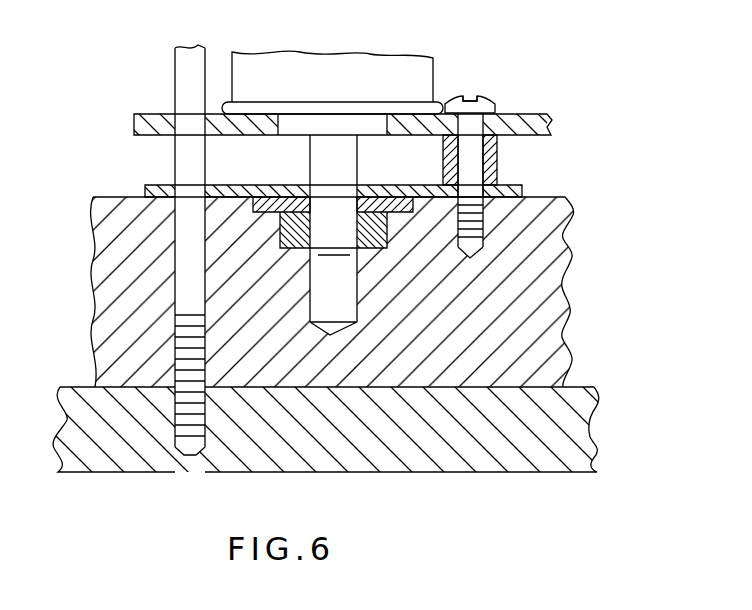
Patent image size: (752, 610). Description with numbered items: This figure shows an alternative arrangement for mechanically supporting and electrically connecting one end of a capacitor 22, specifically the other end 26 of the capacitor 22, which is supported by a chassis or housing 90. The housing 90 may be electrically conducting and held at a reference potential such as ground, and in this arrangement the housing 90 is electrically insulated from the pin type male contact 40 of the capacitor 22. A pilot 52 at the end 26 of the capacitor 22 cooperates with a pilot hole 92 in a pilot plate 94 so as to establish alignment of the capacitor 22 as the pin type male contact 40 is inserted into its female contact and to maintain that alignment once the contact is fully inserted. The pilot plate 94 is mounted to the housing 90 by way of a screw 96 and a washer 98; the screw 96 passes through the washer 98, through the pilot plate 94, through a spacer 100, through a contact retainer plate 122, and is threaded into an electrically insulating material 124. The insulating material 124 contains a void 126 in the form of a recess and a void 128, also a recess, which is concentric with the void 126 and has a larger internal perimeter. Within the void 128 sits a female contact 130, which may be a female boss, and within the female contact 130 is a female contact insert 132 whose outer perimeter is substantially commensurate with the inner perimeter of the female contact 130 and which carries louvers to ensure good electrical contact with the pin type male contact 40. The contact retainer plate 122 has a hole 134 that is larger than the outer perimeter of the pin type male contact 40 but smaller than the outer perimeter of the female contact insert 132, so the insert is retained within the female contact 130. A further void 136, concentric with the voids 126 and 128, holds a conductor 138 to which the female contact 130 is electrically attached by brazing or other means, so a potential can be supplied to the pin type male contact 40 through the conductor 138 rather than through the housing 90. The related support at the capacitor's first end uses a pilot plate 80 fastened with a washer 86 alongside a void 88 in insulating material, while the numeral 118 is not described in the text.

The capacitor 22 is at (373, 123).
The other end of the capacitor 26 is at (490, 100).
The pin type male contact 40 is at (337, 140).
The pilot 52 is at (297, 127).
The pilot plate 80 is at (500, 186).
The washer 86 is at (385, 212).
The void 88 is at (363, 228).
The housing 90 is at (553, 470).
The pilot hole 92 is at (447, 100).
The pilot plate 94 is at (134, 125).
The screw 96 is at (487, 105).
The washer 98 is at (494, 112).
The spacer 100 is at (496, 162).
The bolt 118 is at (175, 72).
The contact retainer plate 122 is at (159, 186).
The electrically insulating material 124 is at (566, 357).
The void 126 is at (383, 293).
The void 128 is at (308, 250).
The female contact 130 is at (357, 250).
The female contact insert 132 is at (352, 312).
The hole 134 is at (357, 187).
The void 136 is at (258, 213).
The conductor 138 is at (283, 199).